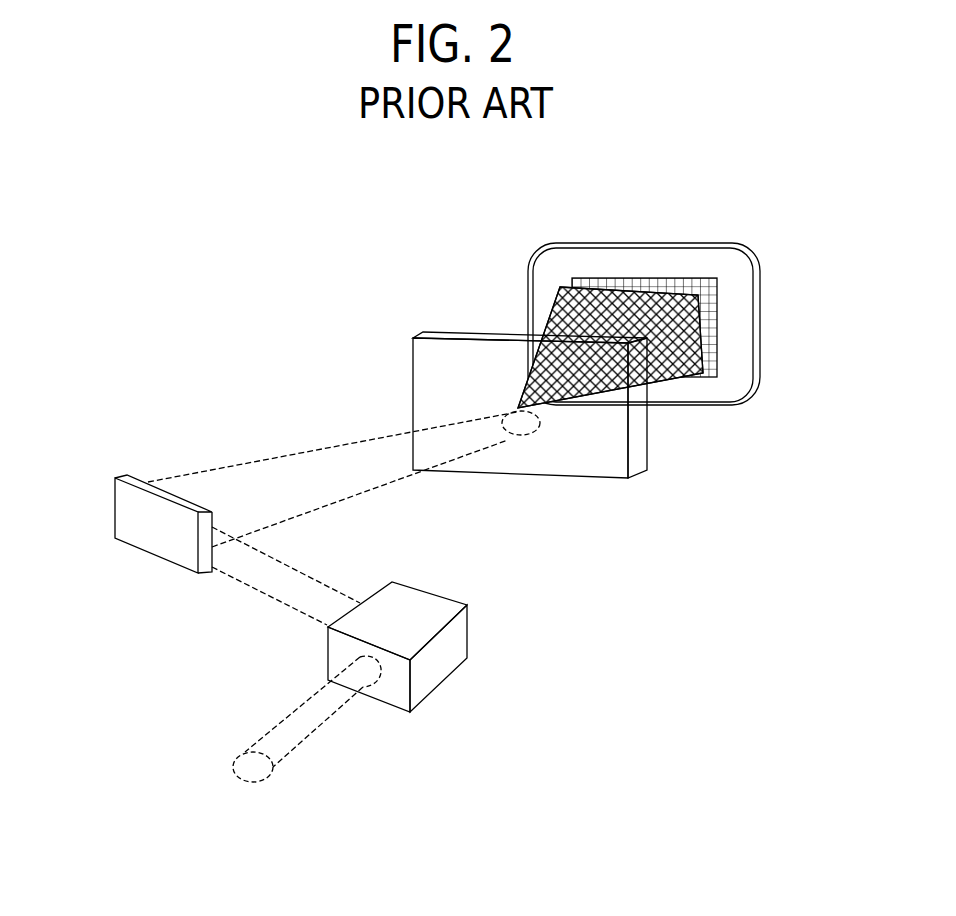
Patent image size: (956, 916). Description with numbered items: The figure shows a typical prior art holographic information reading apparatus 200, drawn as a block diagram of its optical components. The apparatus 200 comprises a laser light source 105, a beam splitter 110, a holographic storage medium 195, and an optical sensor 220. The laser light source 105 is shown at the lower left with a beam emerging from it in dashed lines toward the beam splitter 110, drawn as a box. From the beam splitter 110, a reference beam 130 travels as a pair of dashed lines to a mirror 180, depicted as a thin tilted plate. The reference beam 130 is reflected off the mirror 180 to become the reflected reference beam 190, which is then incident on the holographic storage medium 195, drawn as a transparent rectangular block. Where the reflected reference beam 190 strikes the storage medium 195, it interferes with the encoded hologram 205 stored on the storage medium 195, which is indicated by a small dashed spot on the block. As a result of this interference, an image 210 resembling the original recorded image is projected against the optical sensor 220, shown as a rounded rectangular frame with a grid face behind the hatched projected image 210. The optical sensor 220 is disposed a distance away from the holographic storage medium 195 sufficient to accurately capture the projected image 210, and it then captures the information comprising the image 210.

The laser light source 105 is at (317, 732).
The beam splitter 110 is at (455, 672).
The reference beam 130 is at (293, 608).
The mirror 180 is at (122, 478).
The reflected reference beam 190 is at (322, 448).
The holographic storage medium 195 is at (640, 468).
The holographic information reading apparatus 200 is at (647, 602).
The encoded hologram 205 is at (522, 432).
The image 210 is at (700, 373).
The optical sensor 220 is at (762, 298).